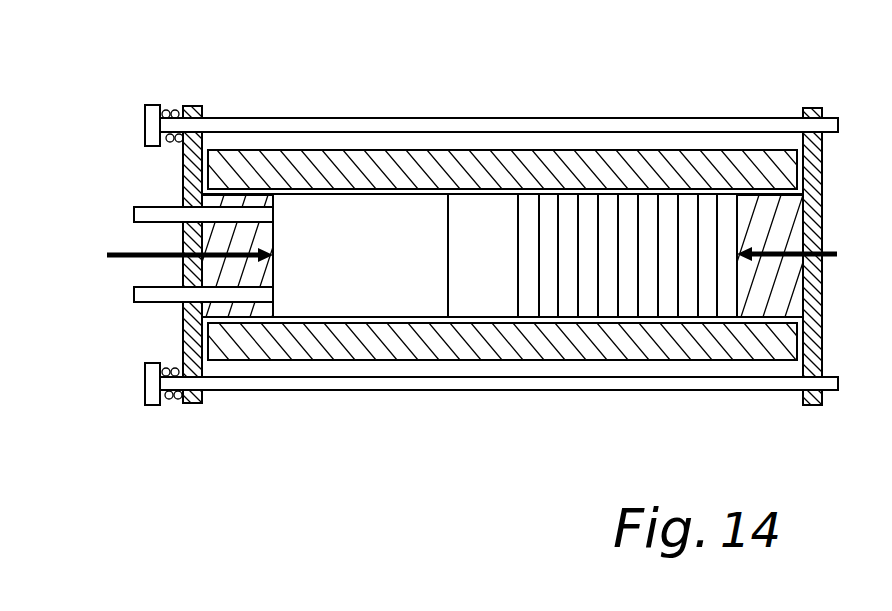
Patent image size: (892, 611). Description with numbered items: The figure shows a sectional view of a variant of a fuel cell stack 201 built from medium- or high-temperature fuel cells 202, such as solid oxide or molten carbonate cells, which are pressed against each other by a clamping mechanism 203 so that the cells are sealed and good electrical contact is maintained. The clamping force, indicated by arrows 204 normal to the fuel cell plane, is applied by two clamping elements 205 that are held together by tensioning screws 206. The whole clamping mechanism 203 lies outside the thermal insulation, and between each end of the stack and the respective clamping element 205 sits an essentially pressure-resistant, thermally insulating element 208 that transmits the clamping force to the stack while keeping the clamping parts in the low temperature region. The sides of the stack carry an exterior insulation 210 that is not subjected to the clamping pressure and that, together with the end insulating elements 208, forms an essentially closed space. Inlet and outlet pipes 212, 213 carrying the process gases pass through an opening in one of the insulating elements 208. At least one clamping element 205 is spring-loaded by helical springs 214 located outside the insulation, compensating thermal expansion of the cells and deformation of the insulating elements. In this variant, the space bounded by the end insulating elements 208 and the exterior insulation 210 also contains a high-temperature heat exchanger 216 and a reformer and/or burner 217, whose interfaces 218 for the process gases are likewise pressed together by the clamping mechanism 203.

The fuel cell stack 201 is at (630, 188).
The fuel cells 202 is at (550, 307).
The clamping mechanism 203 is at (750, 107).
The arrows 204 is at (123, 257).
The clamping elements 205 is at (183, 175).
The tensioning screws 206 is at (461, 118).
The thermally insulating element 208 is at (210, 240).
The exterior insulation 210 is at (557, 162).
The inlet pipe 212 is at (140, 207).
The outlet pipe 213 is at (142, 302).
The helical springs 214 is at (165, 110).
The high-temperature heat exchanger 216 is at (366, 292).
The reformer and/or burner 217 is at (499, 292).
The interfaces 218 is at (448, 213).